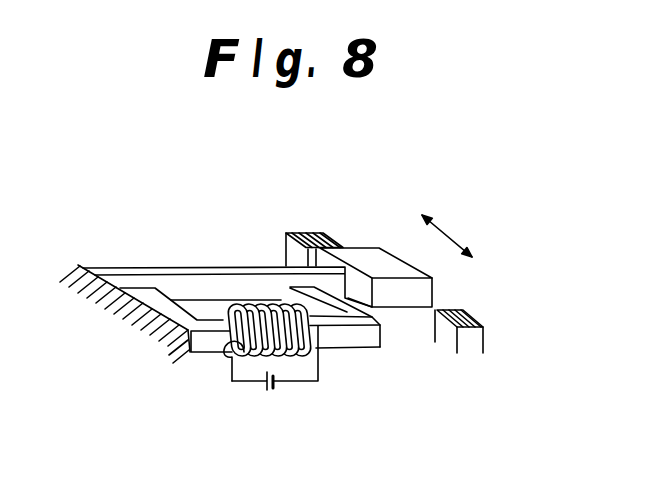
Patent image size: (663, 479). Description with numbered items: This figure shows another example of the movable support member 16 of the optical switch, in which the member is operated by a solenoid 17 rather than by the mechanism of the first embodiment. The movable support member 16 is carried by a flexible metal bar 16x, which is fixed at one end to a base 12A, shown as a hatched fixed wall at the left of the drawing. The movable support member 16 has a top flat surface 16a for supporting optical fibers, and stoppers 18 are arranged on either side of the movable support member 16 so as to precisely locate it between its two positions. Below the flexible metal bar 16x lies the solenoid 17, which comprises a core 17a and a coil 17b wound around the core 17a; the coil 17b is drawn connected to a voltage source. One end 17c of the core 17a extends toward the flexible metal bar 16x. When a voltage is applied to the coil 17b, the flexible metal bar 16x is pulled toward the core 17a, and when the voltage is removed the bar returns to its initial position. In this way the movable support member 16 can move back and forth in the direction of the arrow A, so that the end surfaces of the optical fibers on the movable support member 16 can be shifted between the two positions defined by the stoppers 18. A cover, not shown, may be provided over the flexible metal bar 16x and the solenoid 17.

The base 12A is at (149, 337).
The movable support member 16 is at (426, 289).
The top flat surface 16a is at (376, 247).
The flexible metal bar 16x is at (208, 266).
The solenoid 17 is at (327, 347).
The core 17a is at (351, 347).
The coil 17b is at (222, 359).
The one end of the core 17c is at (382, 322).
The stoppers 18 is at (302, 232).
The arrow A is at (447, 232).